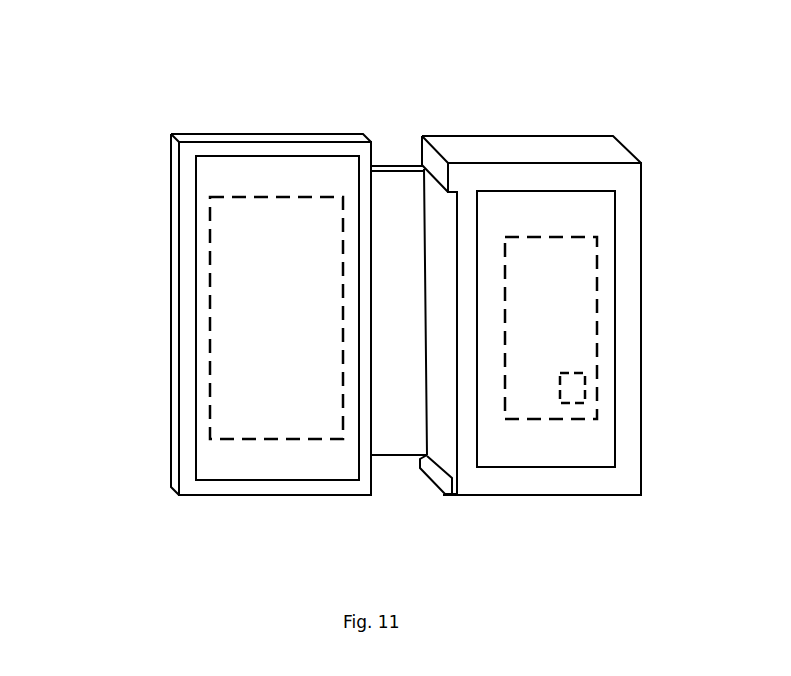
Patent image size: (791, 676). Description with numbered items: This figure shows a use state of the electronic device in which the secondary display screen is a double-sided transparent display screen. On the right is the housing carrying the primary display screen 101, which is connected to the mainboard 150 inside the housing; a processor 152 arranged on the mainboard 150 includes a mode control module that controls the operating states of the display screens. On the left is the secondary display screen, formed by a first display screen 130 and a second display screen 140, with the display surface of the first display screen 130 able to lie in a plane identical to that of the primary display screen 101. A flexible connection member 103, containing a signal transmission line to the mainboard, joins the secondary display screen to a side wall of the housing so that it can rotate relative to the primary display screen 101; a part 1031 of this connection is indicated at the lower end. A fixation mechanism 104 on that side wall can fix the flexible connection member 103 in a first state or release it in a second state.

The primary display screen 101 is at (587, 218).
The flexible connection member 103 is at (392, 165).
The connecting shaft 1031 is at (372, 465).
The fixation mechanism 104 is at (438, 440).
The first display screen 130 is at (196, 460).
The second display screen 140 is at (210, 315).
The mainboard 150 is at (598, 357).
The processor 152 is at (575, 392).